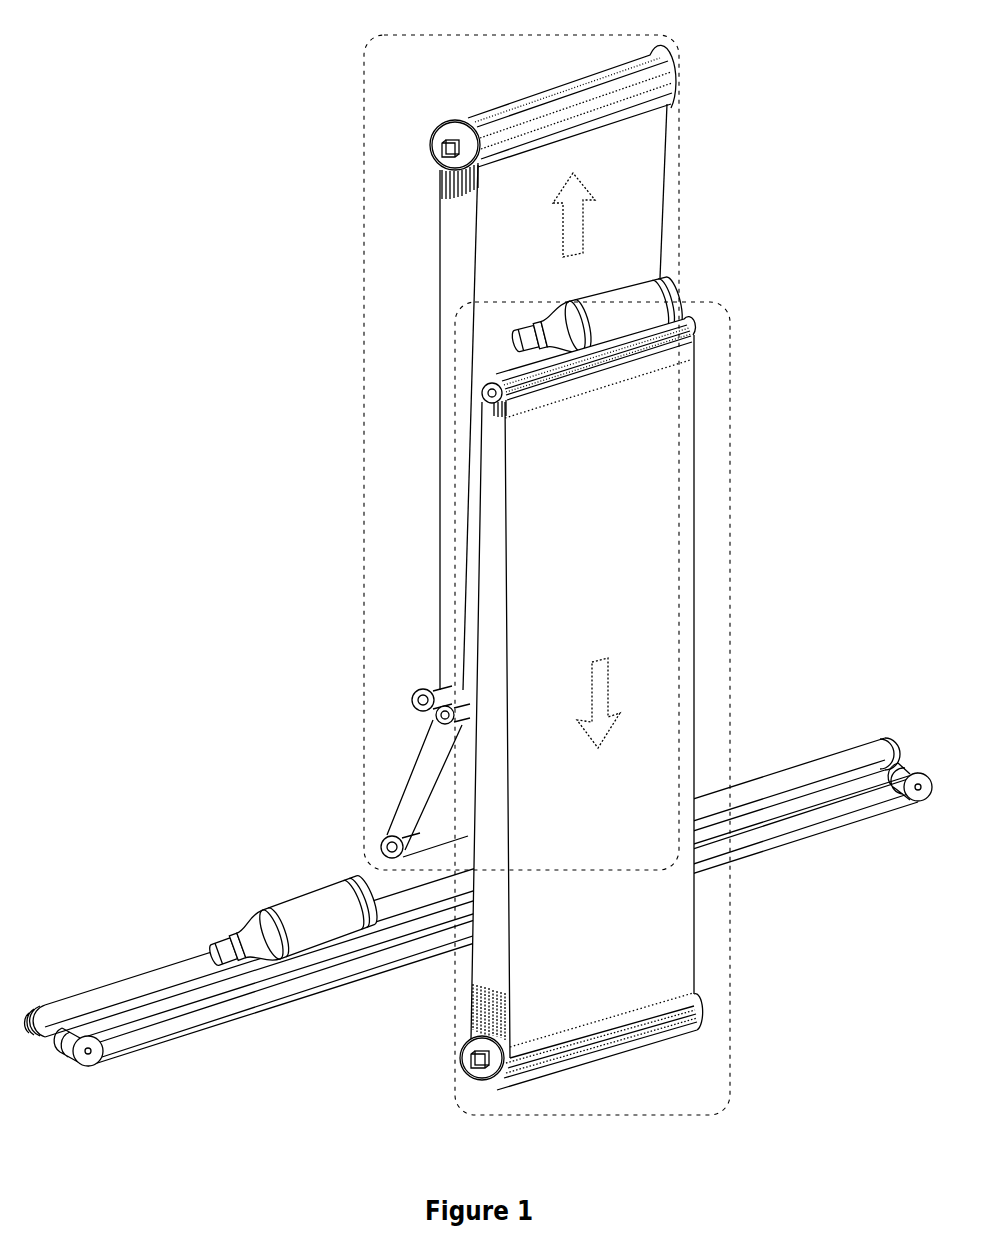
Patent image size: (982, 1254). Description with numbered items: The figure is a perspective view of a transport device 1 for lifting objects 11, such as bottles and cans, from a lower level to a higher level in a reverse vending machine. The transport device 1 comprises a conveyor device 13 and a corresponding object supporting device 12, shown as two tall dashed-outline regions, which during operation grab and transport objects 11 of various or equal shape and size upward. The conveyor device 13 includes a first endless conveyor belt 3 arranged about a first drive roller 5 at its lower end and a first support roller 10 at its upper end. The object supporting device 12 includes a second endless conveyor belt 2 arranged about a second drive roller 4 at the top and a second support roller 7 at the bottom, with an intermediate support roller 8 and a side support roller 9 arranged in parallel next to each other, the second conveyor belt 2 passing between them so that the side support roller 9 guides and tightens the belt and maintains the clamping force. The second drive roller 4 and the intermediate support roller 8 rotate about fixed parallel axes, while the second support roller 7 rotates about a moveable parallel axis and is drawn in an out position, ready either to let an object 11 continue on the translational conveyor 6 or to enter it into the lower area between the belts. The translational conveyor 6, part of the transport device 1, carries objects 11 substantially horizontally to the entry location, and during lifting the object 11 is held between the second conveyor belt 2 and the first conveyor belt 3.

The transport device 1 is at (748, 118).
The second endless conveyor belt 2 is at (432, 318).
The first endless conveyor belt 3 is at (700, 620).
The second drive roller 4 is at (432, 132).
The first drive roller 5 is at (462, 1078).
The translational conveyor 6 is at (150, 962).
The second support roller 7 is at (378, 845).
The intermediate support roller 8 is at (440, 717).
The side support roller 9 is at (412, 700).
The first support roller 10 is at (487, 393).
The object 11 is at (676, 290).
The object supporting device 12 is at (360, 211).
The conveyor device 13 is at (735, 440).